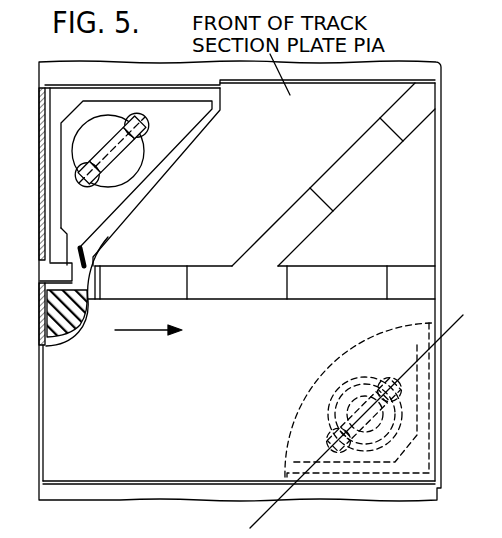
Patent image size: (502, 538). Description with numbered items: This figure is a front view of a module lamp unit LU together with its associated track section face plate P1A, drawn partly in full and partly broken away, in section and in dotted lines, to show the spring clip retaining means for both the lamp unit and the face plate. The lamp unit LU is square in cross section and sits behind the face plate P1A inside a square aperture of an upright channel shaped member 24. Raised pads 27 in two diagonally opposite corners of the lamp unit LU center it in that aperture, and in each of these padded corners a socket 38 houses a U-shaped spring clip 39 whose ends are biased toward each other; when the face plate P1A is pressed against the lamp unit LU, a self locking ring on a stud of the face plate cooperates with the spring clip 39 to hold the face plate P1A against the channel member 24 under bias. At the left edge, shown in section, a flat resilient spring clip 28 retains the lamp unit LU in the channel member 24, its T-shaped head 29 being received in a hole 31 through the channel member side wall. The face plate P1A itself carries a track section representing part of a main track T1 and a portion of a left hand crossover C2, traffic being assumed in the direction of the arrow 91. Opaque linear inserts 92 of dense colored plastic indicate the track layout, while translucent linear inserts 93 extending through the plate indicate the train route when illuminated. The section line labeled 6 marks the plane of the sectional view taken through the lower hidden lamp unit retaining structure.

The track section face plate P1A is at (413, 147).
The lamp unit LU is at (111, 140).
The raised pads 27 is at (165, 101).
The socket 38 is at (82, 137).
The U-shaped spring clip 39 is at (72, 50).
The spring clip 28 is at (52, 248).
The T-shaped head 29 is at (48, 272).
The hole 31 is at (38, 295).
The main track T1 is at (262, 293).
The left hand crossover C2 is at (272, 232).
The opaque linear inserts 92 is at (400, 110).
The translucent linear inserts 93 is at (343, 280).
The arrow 91 is at (143, 331).
The section line 6- 6 is at (443, 300).
The channel shaped member 24 is at (427, 495).